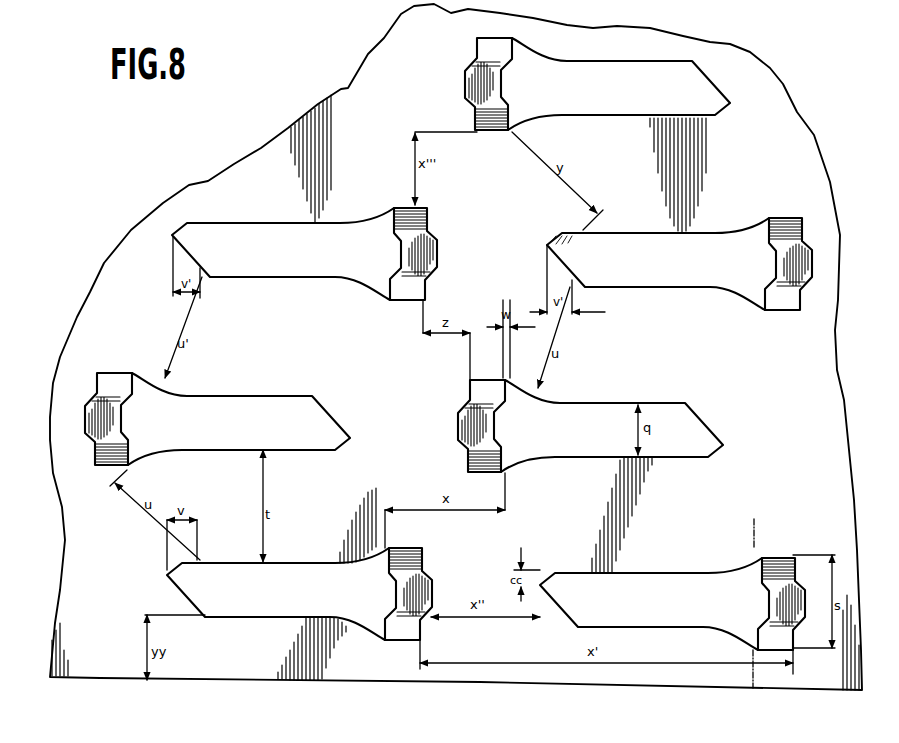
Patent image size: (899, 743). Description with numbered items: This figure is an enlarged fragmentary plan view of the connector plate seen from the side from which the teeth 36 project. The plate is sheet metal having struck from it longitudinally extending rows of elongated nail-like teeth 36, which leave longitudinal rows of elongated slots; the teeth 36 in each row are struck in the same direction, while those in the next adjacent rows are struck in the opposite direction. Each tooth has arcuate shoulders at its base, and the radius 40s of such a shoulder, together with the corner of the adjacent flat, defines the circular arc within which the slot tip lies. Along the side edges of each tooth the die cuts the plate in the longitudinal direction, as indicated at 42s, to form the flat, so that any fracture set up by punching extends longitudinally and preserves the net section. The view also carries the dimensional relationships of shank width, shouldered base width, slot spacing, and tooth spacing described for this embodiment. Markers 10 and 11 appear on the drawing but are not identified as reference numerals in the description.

The plate blank with grain direction 10 is at (65, 417).
The section line / plate edge 11 is at (745, 527).
The teeth 36 is at (412, 606).
The radius of the shoulder 40s is at (719, 624).
The longitudinal cut 42s is at (311, 607).